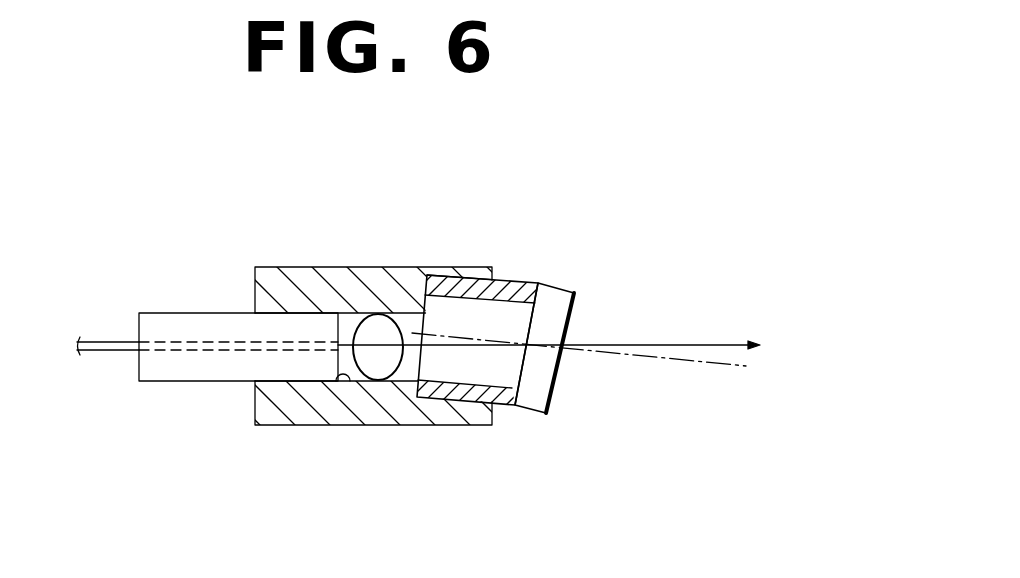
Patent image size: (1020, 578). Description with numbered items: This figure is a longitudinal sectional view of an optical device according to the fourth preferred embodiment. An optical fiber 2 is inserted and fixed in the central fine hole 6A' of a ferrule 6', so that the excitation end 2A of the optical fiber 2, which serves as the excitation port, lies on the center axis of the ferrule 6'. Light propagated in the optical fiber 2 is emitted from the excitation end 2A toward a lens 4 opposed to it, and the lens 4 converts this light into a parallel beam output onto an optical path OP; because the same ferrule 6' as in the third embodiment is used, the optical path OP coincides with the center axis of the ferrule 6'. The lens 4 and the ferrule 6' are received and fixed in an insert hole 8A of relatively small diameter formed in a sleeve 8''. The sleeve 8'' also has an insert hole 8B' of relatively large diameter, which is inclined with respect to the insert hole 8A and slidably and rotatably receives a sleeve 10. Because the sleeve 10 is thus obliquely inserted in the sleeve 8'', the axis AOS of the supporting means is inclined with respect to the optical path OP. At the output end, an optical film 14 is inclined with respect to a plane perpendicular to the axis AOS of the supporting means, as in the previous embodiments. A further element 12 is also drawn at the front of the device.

The optical fiber 2 is at (101, 336).
The excitation end 2A is at (341, 346).
The lens 4 is at (378, 378).
The ferrule 6' is at (238, 386).
The central fine hole 6A' is at (170, 291).
The sleeve 8'' is at (390, 291).
The insert hole 8A is at (337, 383).
The insert hole 8B' is at (461, 230).
The sleeve 10 is at (517, 283).
The optical element 12 is at (528, 411).
The optical film 14 is at (576, 298).
The optical path OP is at (673, 345).
The axis of the supporting means AOS is at (628, 356).